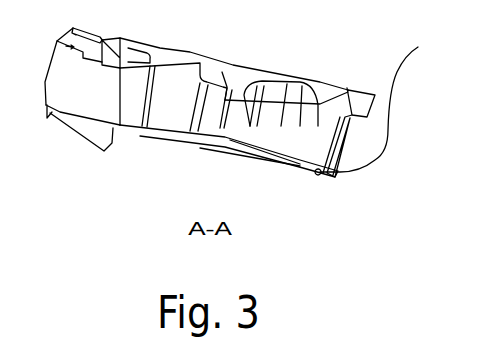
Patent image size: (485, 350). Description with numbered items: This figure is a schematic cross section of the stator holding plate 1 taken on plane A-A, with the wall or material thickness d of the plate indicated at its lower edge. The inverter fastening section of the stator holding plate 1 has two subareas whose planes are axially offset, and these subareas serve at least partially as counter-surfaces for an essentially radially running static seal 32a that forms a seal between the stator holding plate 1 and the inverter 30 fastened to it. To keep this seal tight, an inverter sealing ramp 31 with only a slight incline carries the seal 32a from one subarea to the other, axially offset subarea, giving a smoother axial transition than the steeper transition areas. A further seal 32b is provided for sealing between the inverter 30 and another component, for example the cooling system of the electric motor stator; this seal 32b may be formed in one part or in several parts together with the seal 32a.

The stator holding plate 1 is at (115, 129).
The wall/material thickness d is at (103, 150).
The inverter sealing ramp 31 is at (165, 137).
The inverter housing seal 32a is at (240, 132).
The inverter 30 is at (352, 90).
The inverter housing seal 32b is at (384, 99).